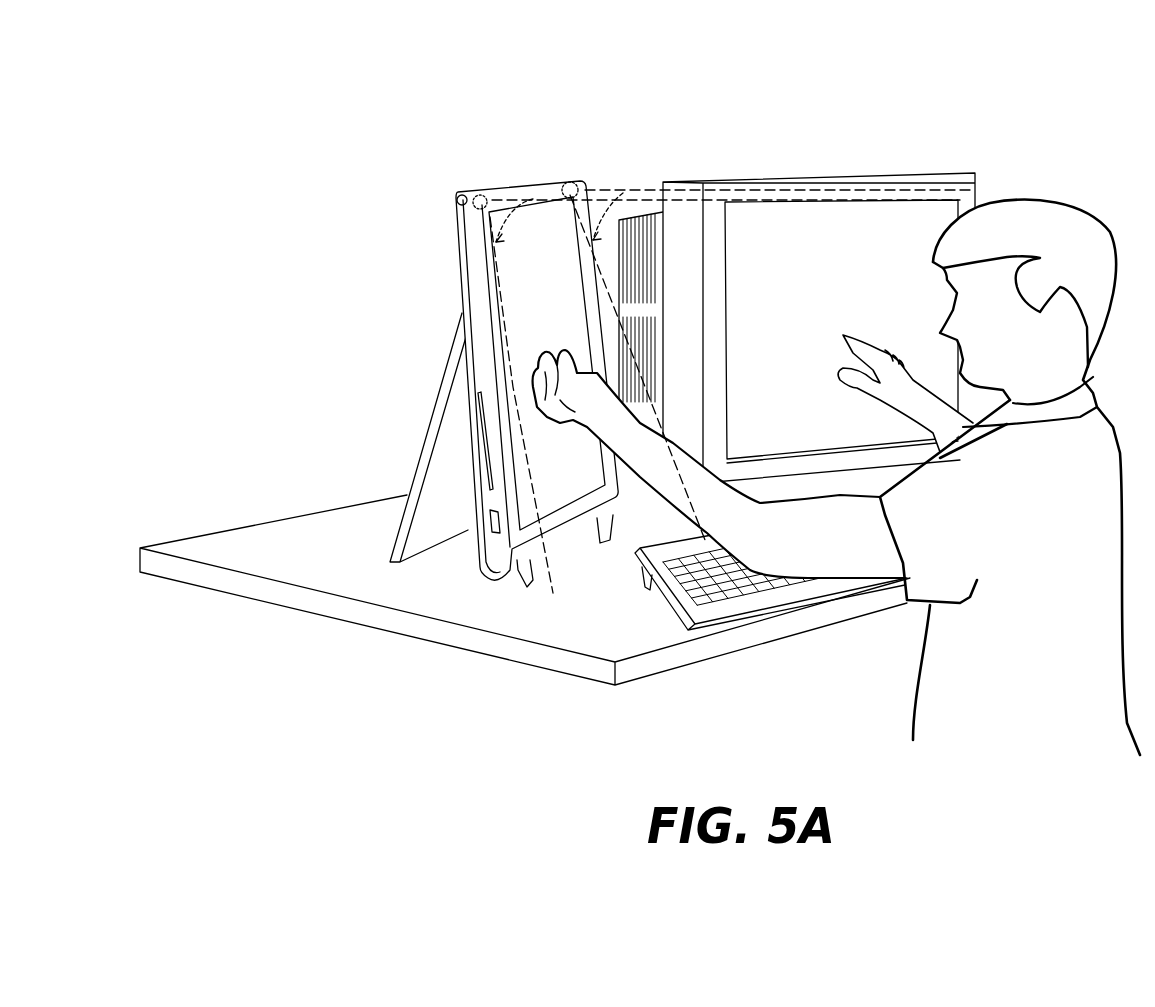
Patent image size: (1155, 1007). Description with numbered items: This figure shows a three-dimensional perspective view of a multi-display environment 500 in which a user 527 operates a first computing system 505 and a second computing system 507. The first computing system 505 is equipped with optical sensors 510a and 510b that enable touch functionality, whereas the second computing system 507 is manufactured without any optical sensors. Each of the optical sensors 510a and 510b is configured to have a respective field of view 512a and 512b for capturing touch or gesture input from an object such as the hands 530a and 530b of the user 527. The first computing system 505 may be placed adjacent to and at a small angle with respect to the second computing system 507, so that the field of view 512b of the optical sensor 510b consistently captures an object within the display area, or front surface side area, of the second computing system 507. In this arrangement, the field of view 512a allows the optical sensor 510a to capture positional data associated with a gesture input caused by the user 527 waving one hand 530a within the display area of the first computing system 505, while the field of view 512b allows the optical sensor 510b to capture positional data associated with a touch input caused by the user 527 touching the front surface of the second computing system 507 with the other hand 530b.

The multi-display environment 500 is at (373, 81).
The first computing system 505 is at (455, 212).
The second computing system 507 is at (908, 172).
The optical sensor 510a is at (475, 197).
The optical sensor 510b is at (563, 184).
The field of view 512a is at (520, 225).
The field of view 512b is at (626, 205).
The user 527 is at (836, 467).
The user's hand 530a is at (573, 427).
The user's hand 530b is at (850, 392).